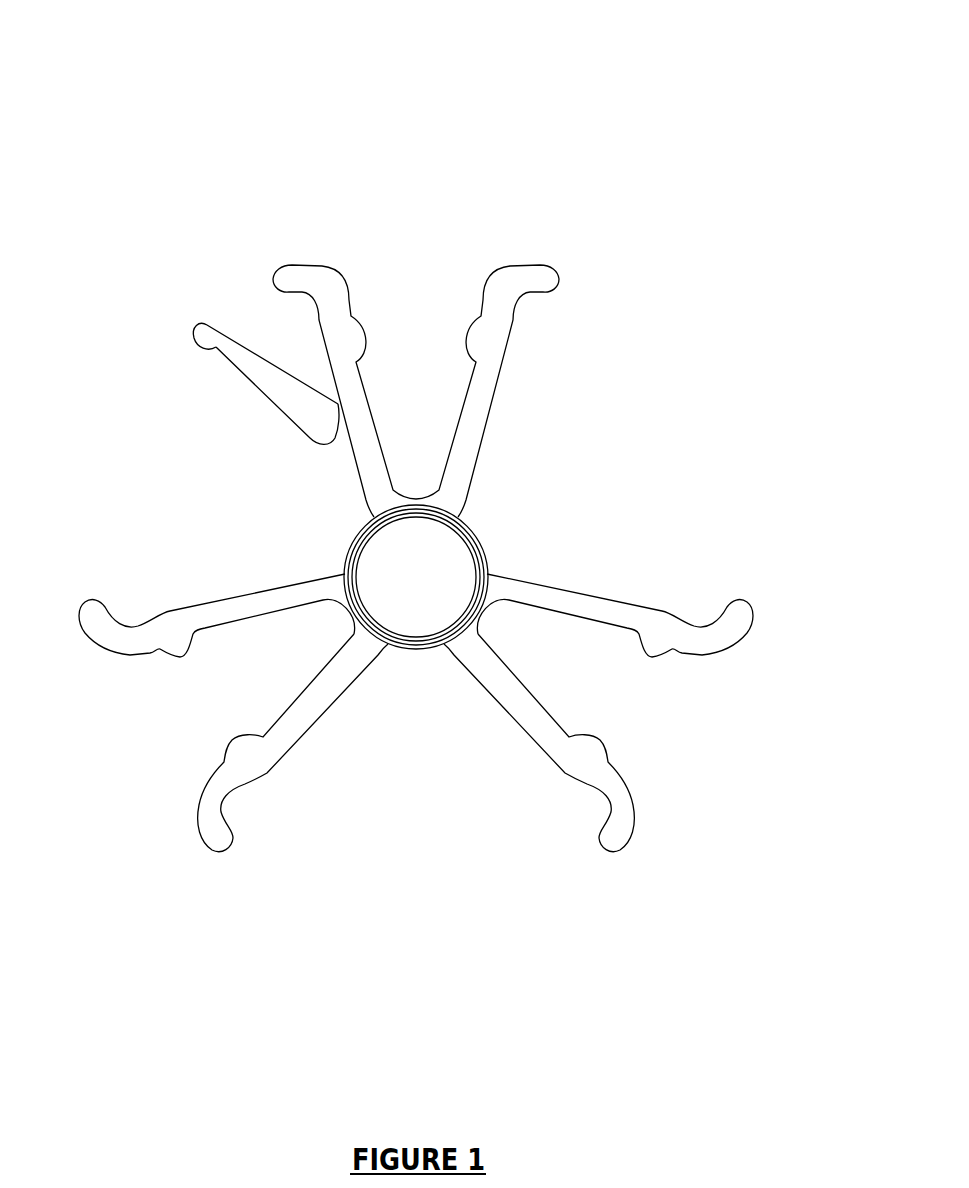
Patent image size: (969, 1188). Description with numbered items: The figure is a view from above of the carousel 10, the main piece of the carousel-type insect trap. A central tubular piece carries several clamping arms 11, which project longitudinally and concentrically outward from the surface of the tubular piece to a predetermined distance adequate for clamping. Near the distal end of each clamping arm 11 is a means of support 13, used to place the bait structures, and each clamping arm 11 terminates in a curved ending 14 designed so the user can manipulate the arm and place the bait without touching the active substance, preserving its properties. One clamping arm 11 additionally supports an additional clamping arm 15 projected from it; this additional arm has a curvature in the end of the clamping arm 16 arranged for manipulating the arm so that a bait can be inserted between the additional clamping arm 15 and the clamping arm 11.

The carousel 10 is at (448, 503).
The clamping arm 11 is at (513, 399).
The means of support 13 is at (168, 677).
The curved ending 14 is at (637, 851).
The additional clamping arm 15 is at (244, 390).
The curvature in the end of the clamping arm 16 is at (164, 312).